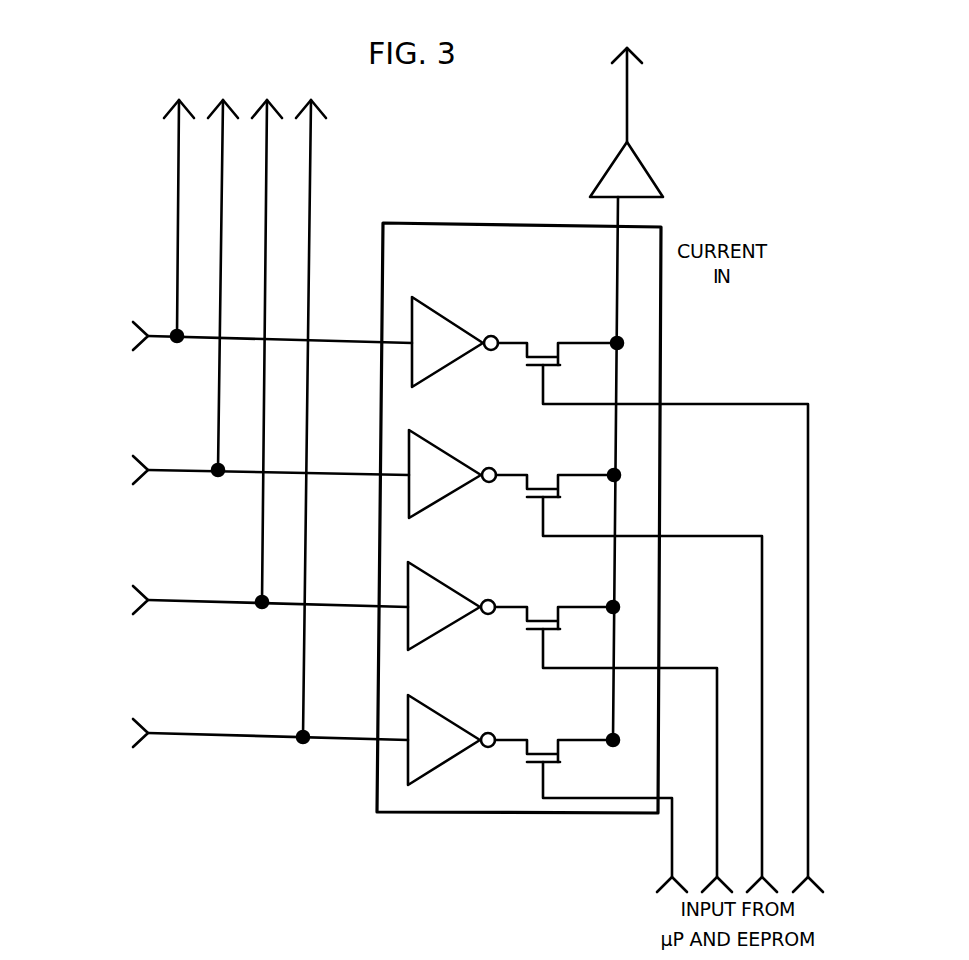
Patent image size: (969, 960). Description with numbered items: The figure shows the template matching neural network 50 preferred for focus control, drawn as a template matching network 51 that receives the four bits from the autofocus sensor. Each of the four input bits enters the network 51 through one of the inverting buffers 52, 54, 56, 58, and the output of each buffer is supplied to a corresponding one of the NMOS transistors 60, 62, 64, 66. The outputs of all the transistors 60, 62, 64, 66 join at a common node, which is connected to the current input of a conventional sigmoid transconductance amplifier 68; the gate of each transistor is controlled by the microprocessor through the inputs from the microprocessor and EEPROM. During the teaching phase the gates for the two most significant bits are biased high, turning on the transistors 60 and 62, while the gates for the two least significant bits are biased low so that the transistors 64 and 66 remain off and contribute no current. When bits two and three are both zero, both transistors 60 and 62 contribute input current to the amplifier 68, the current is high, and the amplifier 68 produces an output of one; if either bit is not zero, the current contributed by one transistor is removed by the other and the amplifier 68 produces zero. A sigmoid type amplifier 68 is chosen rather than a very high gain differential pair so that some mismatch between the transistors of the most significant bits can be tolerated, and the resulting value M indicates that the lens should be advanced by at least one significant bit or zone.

The neural network 50 is at (219, 813).
The network 51 is at (409, 814).
The inverting buffer 52 is at (438, 358).
The inverting buffer 54 is at (437, 490).
The inverting buffer 56 is at (449, 618).
The inverting buffer 58 is at (440, 745).
The NMOS transistor 60 is at (556, 353).
The NMOS transistor 62 is at (555, 484).
The NMOS transistor 64 is at (556, 617).
The NMOS transistor 66 is at (551, 748).
The sigmoid transconductance amplifier 68 is at (604, 172).